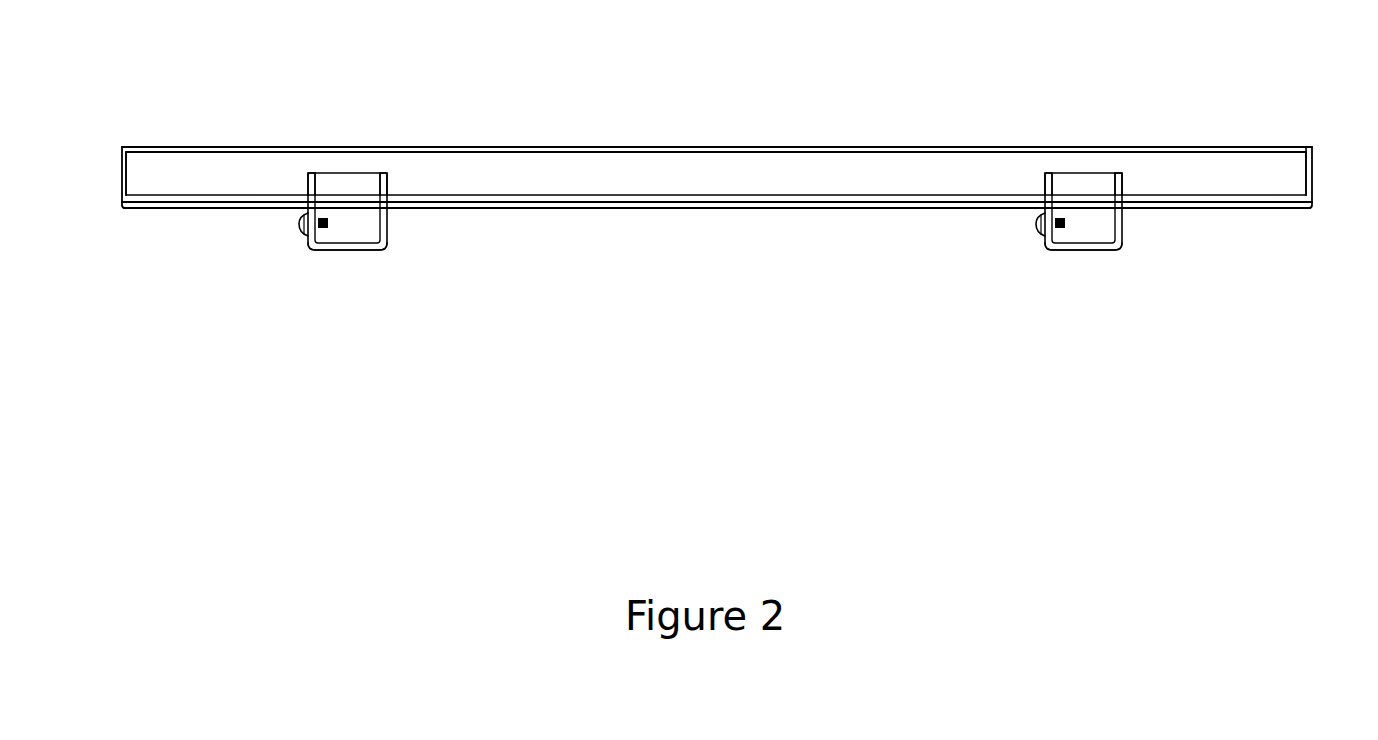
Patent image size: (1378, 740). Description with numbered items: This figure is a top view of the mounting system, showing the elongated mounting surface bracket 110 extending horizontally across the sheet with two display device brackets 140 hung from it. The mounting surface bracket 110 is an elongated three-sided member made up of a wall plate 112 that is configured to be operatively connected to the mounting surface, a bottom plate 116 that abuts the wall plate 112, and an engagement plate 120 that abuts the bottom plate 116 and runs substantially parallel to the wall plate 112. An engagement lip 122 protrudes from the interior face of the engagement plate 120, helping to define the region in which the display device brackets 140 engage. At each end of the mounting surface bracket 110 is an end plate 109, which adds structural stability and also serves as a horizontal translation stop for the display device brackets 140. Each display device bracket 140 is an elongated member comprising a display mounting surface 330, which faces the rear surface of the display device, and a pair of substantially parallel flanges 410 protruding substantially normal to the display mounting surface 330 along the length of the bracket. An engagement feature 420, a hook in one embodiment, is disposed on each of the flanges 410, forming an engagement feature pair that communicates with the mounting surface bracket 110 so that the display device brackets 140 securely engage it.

The end plate 109 is at (121, 180).
The mounting surface bracket 110 is at (822, 172).
The wall plate 112 is at (478, 148).
The bottom plate 116 is at (668, 175).
The engagement plate 120 is at (707, 205).
The engagement lip 122 is at (888, 200).
The display device bracket 140 is at (390, 230).
The display mounting surface 330 is at (348, 252).
The flange 410 is at (388, 220).
The engagement feature 420 is at (385, 186).